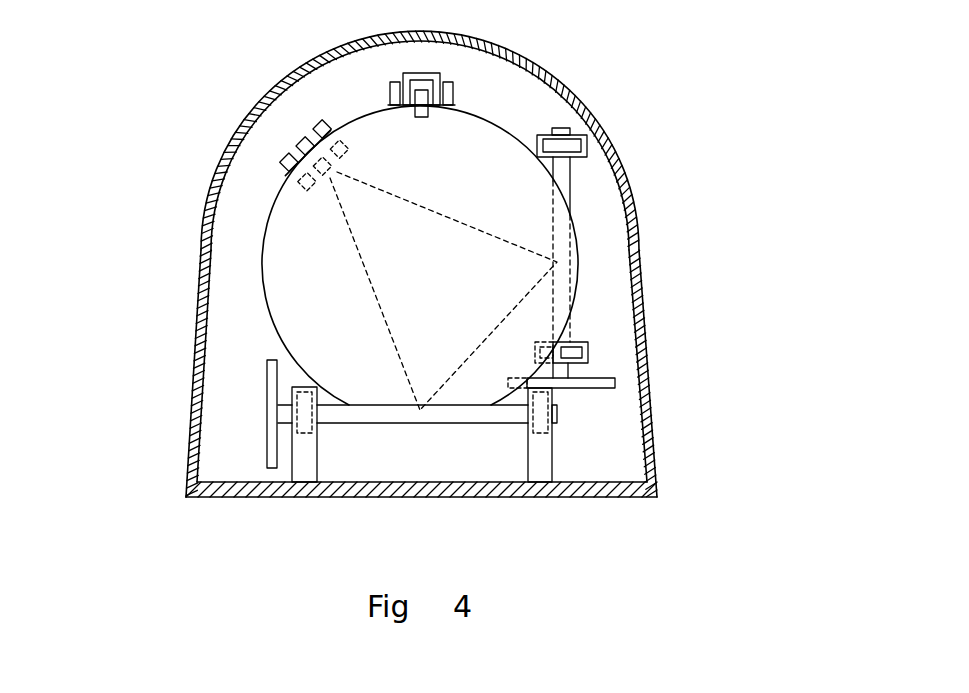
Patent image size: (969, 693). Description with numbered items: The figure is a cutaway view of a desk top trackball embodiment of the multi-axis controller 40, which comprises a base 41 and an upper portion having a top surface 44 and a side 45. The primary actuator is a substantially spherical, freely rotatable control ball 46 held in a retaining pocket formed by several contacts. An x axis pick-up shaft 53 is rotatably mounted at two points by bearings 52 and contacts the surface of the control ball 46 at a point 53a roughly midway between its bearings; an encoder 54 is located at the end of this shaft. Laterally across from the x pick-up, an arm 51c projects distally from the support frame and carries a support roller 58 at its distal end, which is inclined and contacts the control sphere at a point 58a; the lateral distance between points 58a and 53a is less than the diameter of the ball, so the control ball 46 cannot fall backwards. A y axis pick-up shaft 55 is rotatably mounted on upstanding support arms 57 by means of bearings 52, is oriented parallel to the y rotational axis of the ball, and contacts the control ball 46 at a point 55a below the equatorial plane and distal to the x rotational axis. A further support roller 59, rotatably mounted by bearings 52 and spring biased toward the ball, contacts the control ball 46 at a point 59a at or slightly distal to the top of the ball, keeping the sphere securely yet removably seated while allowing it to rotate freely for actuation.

The multi-axis controller 40 is at (172, 79).
The base 41 is at (315, 512).
The top surface 44 is at (588, 76).
The side 45 is at (664, 362).
The control ball 46 is at (350, 310).
The arm 51c is at (353, 103).
The bearings 52 is at (545, 432).
The x axis pick-up shaft 53 is at (555, 250).
The contact point 53a is at (556, 263).
The encoder 54 is at (629, 394).
The y axis pick-up shaft 55 is at (503, 425).
The contact point 55a is at (412, 400).
The upstanding support arms 57 is at (317, 448).
The support roller 58 is at (296, 133).
The contact point 58a is at (337, 181).
The support roller 59 is at (447, 113).
The contact point 59a is at (422, 120).